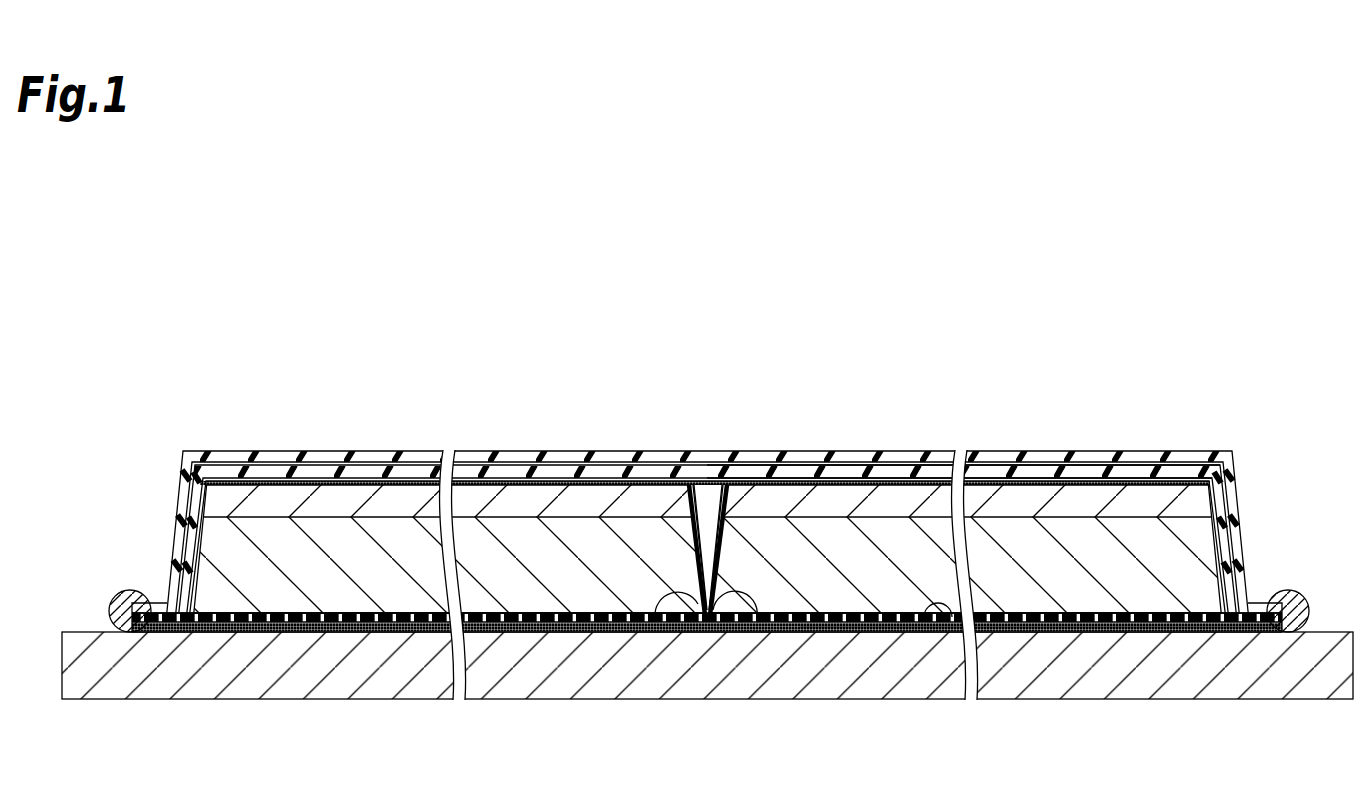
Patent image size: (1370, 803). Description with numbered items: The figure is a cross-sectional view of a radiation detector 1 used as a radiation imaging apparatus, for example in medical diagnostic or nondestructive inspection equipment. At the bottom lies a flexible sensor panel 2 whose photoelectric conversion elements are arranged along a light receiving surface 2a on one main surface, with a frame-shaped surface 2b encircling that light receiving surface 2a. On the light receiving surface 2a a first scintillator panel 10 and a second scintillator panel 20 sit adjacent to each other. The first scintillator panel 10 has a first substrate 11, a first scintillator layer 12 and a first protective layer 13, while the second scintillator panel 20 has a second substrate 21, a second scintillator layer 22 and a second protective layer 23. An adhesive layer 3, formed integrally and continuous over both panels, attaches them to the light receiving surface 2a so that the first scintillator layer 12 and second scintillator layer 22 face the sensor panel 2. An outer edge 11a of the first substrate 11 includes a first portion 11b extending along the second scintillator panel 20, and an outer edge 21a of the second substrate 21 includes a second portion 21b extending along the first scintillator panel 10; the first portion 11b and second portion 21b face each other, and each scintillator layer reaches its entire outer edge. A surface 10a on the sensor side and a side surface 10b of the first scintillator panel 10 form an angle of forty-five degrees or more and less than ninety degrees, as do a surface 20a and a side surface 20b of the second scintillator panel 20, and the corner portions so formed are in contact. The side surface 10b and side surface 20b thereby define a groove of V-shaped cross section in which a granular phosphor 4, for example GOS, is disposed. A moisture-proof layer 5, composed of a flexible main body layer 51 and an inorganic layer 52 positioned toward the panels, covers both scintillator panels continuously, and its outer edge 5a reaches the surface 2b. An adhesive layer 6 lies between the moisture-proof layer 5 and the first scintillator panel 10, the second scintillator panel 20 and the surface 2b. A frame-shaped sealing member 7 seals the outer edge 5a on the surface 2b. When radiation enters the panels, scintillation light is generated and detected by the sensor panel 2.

The radiation detector 1 is at (1030, 336).
The sensor panel 2 is at (468, 692).
The light receiving surface 2a is at (930, 621).
The surface 2b is at (83, 630).
The adhesive layer 3 is at (250, 633).
The granular phosphor 4 is at (708, 490).
The moisture-proof layer 5 is at (932, 370).
The outer edge 5a is at (1252, 603).
The main body layer 51 is at (840, 457).
The inorganic layer 52 is at (885, 463).
The adhesive layer 6 is at (562, 476).
The sealing member 7 is at (1298, 593).
The first scintillator panel 10 is at (270, 476).
The surface 10a is at (528, 633).
The side surface 10b is at (697, 490).
The first substrate 11 is at (335, 487).
The outer edge 11a is at (637, 640).
The first portion 11b is at (695, 530).
The first scintillator layer 12 is at (398, 601).
The first protective layer 13 is at (317, 633).
The second scintillator panel 20 is at (1127, 472).
The surface 20a is at (848, 633).
The side surface 20b is at (718, 490).
The second substrate 21 is at (1050, 490).
The outer edge 21a is at (771, 640).
The second portion 21b is at (722, 530).
The second scintillator layer 22 is at (1038, 599).
The second protective layer 23 is at (1090, 626).